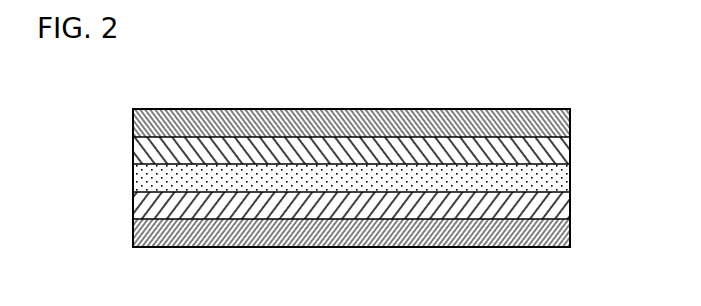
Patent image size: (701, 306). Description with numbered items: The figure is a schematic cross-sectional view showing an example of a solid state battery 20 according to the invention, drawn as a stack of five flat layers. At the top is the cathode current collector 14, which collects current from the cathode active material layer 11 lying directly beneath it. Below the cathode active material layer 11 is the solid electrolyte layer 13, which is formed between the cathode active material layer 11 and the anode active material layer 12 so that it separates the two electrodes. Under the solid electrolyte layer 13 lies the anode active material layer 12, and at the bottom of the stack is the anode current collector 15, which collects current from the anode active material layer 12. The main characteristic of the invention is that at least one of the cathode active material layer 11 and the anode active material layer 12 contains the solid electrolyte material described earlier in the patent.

The solid state battery 20 is at (549, 73).
The cathode current collector 14 is at (557, 120).
The cathode active material layer 11 is at (557, 148).
The solid electrolyte layer 13 is at (557, 175).
The anode active material layer 12 is at (557, 203).
The anode current collector 15 is at (557, 230).